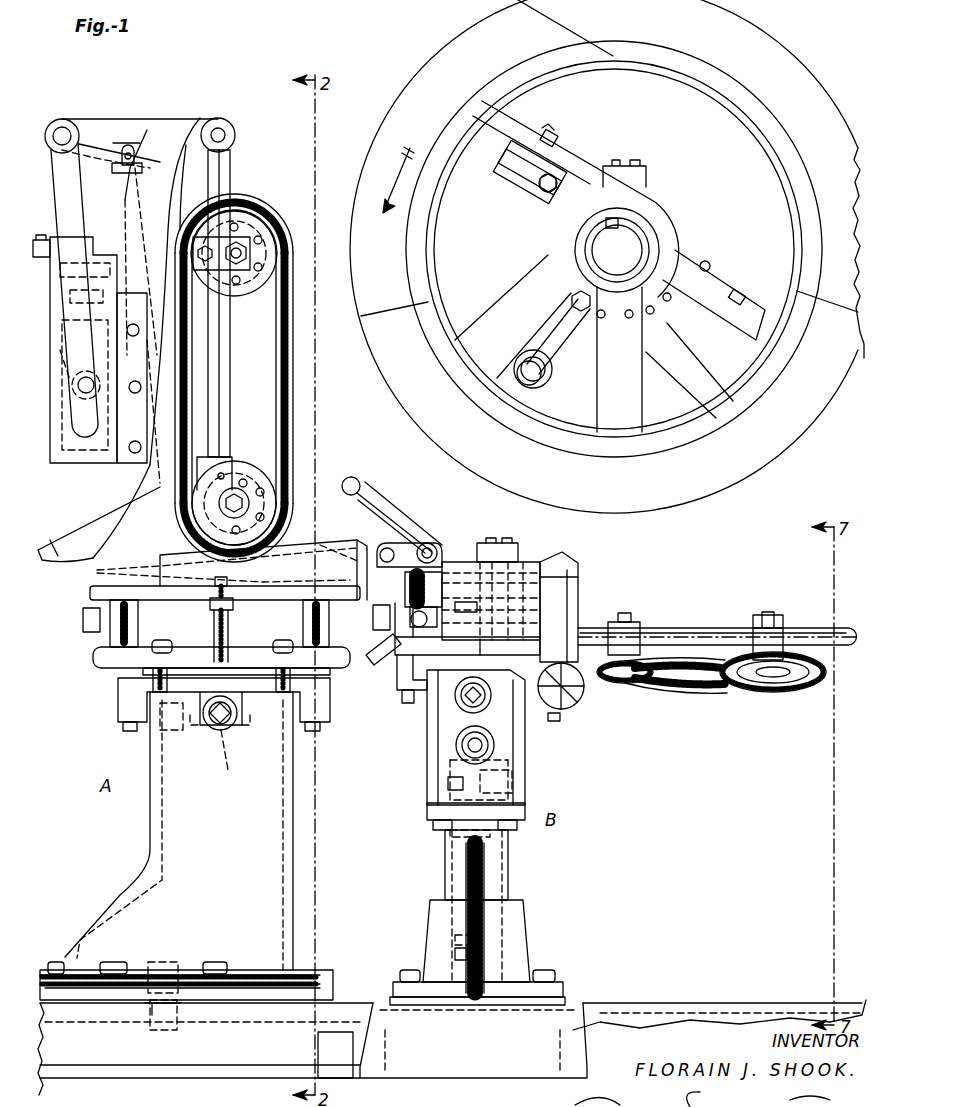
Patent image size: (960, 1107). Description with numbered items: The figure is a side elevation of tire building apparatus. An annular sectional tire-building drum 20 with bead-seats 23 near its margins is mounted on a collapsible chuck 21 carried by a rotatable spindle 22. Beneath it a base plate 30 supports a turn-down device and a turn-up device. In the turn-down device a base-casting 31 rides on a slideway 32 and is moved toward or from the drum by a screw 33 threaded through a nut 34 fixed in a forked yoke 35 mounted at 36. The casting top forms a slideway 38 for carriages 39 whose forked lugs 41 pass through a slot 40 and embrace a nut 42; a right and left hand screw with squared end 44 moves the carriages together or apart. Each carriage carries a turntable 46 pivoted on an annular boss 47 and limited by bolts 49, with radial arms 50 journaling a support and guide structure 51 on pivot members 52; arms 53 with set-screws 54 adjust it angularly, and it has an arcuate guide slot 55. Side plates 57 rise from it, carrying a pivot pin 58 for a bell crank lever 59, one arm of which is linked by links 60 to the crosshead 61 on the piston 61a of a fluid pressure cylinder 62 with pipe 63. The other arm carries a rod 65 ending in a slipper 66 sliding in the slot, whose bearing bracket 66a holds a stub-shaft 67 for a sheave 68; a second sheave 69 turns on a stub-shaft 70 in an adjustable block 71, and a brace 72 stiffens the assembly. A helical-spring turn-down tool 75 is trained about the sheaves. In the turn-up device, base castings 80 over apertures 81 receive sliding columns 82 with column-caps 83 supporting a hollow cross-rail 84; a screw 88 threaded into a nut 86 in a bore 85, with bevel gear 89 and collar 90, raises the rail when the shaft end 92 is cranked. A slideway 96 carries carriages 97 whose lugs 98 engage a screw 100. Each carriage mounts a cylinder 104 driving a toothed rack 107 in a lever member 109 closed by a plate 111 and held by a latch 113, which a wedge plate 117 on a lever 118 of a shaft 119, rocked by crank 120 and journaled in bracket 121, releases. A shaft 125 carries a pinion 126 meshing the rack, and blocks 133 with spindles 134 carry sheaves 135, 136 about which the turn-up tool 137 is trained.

The tire-building form or drum 20 is at (438, 62).
The collapsible chuck 21 is at (550, 208).
The rotatable spindle 22 is at (640, 248).
The bead-seats 23 is at (549, 50).
The base plate 30 is at (626, 1003).
The base-casting or housing 31 is at (179, 831).
The slideway 32 is at (333, 980).
The screw 33 is at (243, 962).
The nut 34 is at (172, 962).
The forked yoke 35 is at (143, 962).
The mounting point of forked yoke 36 is at (150, 1013).
The slideway 38 is at (302, 724).
The carriages or slides 39 is at (316, 690).
The slot 40 is at (160, 730).
The forked lugs 41 is at (248, 727).
The nut 42 is at (226, 735).
The squared end portion 44 is at (216, 729).
The turntable 46 is at (166, 638).
The annular boss 47 is at (275, 648).
The bolts 49 is at (300, 668).
The radially extending arms 50 is at (318, 650).
The support and guide structure 51 is at (90, 596).
The pivot members 52 is at (83, 626).
The laterally extending arms 53 is at (236, 600).
The set-screws 54 is at (214, 640).
The arcuate guide slot 55 is at (398, 520).
The side plates 57 is at (127, 477).
The pivot pin 58 is at (222, 132).
The bell crank lever 59 is at (164, 118).
The links 60 is at (75, 224).
The crosshead 61 is at (86, 393).
The piston 61a is at (60, 352).
The fluid pressure operated cylinder 62 is at (53, 336).
The fluid inlet and outlet pipe 63 is at (45, 240).
The rod 65 is at (230, 358).
The slipper 66 is at (50, 547).
The bearing bracket 66a is at (240, 463).
The stub-shaft 67 is at (245, 510).
The sheave 68 is at (270, 470).
The sheave 69 is at (245, 292).
The stub-shaft 70 is at (240, 250).
The block 71 is at (235, 232).
The brace 72 is at (123, 170).
The tire building tool 75 is at (296, 372).
The base castings 80 is at (520, 940).
The aperture 81 is at (440, 1017).
The column 82 is at (510, 875).
The column-cap 83 is at (427, 812).
The cross-rail 84 is at (527, 735).
The vertical bore 85 is at (455, 955).
The nut 86 is at (455, 938).
The screw 88 is at (487, 890).
The bevel gear 89 is at (512, 780).
The collar 90 is at (456, 832).
The squared end portion 92 is at (485, 748).
The slideway 96 is at (410, 707).
The carriages or slides 97 is at (402, 675).
The slotted lugs 98 is at (460, 720).
The screw 100 is at (447, 745).
The fluid pressure operated cylinder 104 is at (368, 652).
The toothed rack 107 is at (440, 655).
The lever member 109 is at (528, 567).
The plate 111 is at (466, 612).
The latch 113 is at (378, 608).
The cam or wedge plate 117 is at (415, 556).
The lever 118 is at (428, 543).
The shaft 119 is at (442, 548).
The crank 120 is at (372, 490).
The bearing bracket 121 is at (500, 545).
The shaft 125 is at (565, 557).
The pinion 126 is at (452, 573).
The blocks 133 is at (785, 640).
The spindles 134 is at (770, 605).
The sheave 135 is at (584, 690).
The sheave 136 is at (765, 685).
The turn-up tool 137 is at (705, 690).